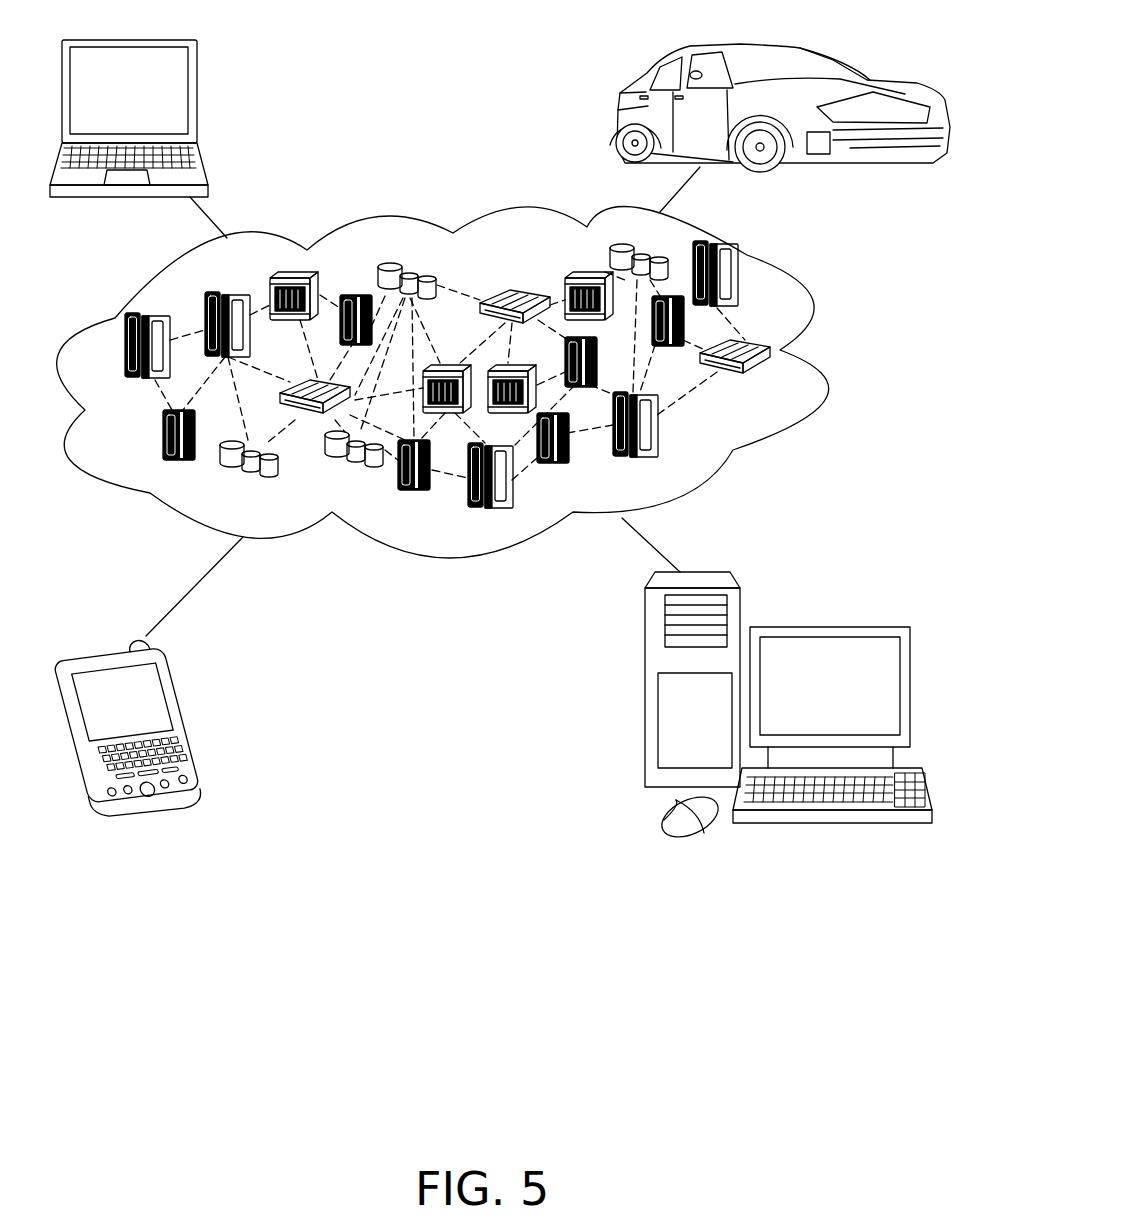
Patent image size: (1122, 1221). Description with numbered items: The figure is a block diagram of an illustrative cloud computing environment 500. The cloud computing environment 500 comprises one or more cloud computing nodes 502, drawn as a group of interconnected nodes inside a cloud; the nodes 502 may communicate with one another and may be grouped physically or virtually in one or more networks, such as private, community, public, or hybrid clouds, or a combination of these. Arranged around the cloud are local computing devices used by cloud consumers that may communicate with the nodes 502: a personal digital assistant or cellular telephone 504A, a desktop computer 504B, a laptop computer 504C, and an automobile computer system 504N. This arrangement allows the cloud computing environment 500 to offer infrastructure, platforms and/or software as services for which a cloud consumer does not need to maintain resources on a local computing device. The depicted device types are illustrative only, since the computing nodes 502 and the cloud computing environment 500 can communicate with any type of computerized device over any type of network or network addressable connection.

The cloud computing environment 500 is at (782, 350).
The cloud computing nodes 502 is at (775, 387).
The personal digital assistant (PDA) or cellular telephone 504A is at (175, 680).
The desktop computer 504B is at (817, 627).
The laptop computer 504C is at (197, 78).
The automobile computer system 504N is at (617, 113).